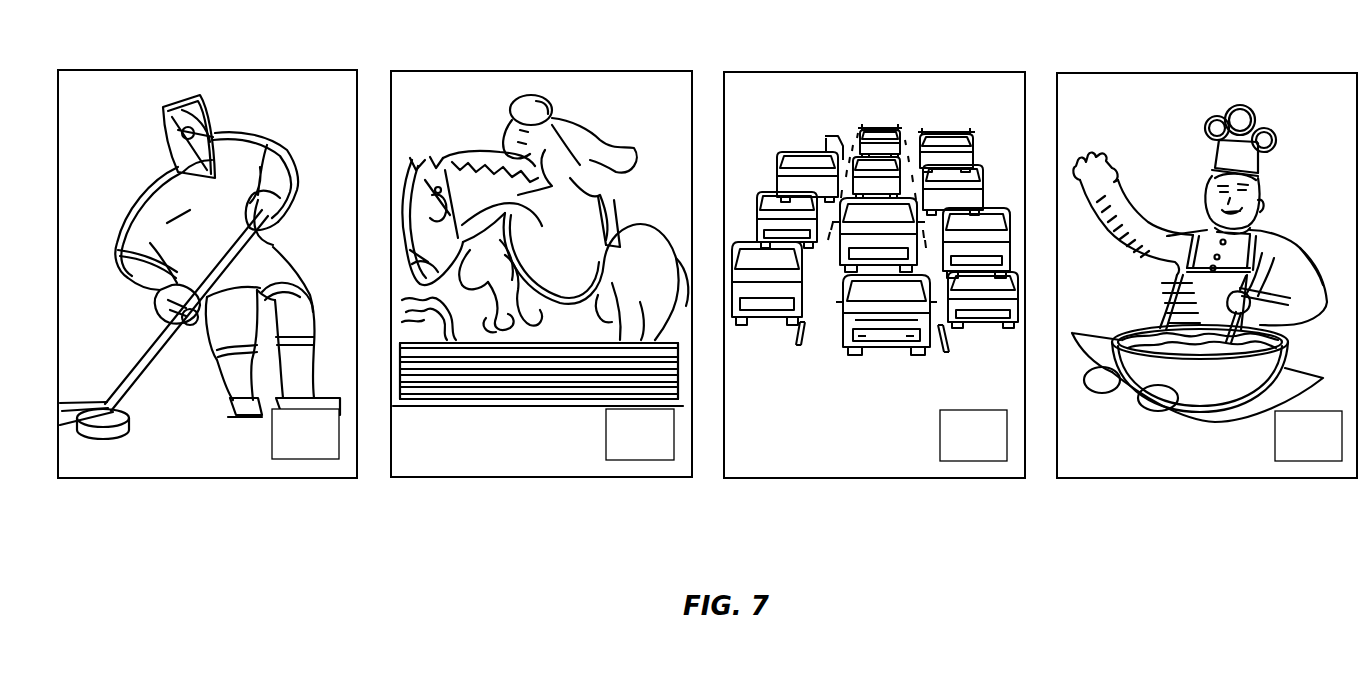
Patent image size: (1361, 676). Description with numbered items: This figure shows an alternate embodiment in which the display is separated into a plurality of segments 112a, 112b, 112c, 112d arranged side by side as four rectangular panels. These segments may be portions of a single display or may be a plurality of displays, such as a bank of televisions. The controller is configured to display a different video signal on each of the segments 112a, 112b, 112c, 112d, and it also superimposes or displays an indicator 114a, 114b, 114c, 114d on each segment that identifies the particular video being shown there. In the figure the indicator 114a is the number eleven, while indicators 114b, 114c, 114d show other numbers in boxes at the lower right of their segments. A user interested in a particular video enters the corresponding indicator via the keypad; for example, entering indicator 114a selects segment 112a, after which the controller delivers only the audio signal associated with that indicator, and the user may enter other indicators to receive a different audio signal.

The segment 112a is at (143, 70).
The segment 112b is at (476, 71).
The segment 112c is at (808, 72).
The segment 112d is at (1141, 73).
The indicator 114a is at (318, 460).
The indicator 114b is at (650, 460).
The indicator 114c is at (985, 461).
The indicator 114d is at (1318, 461).